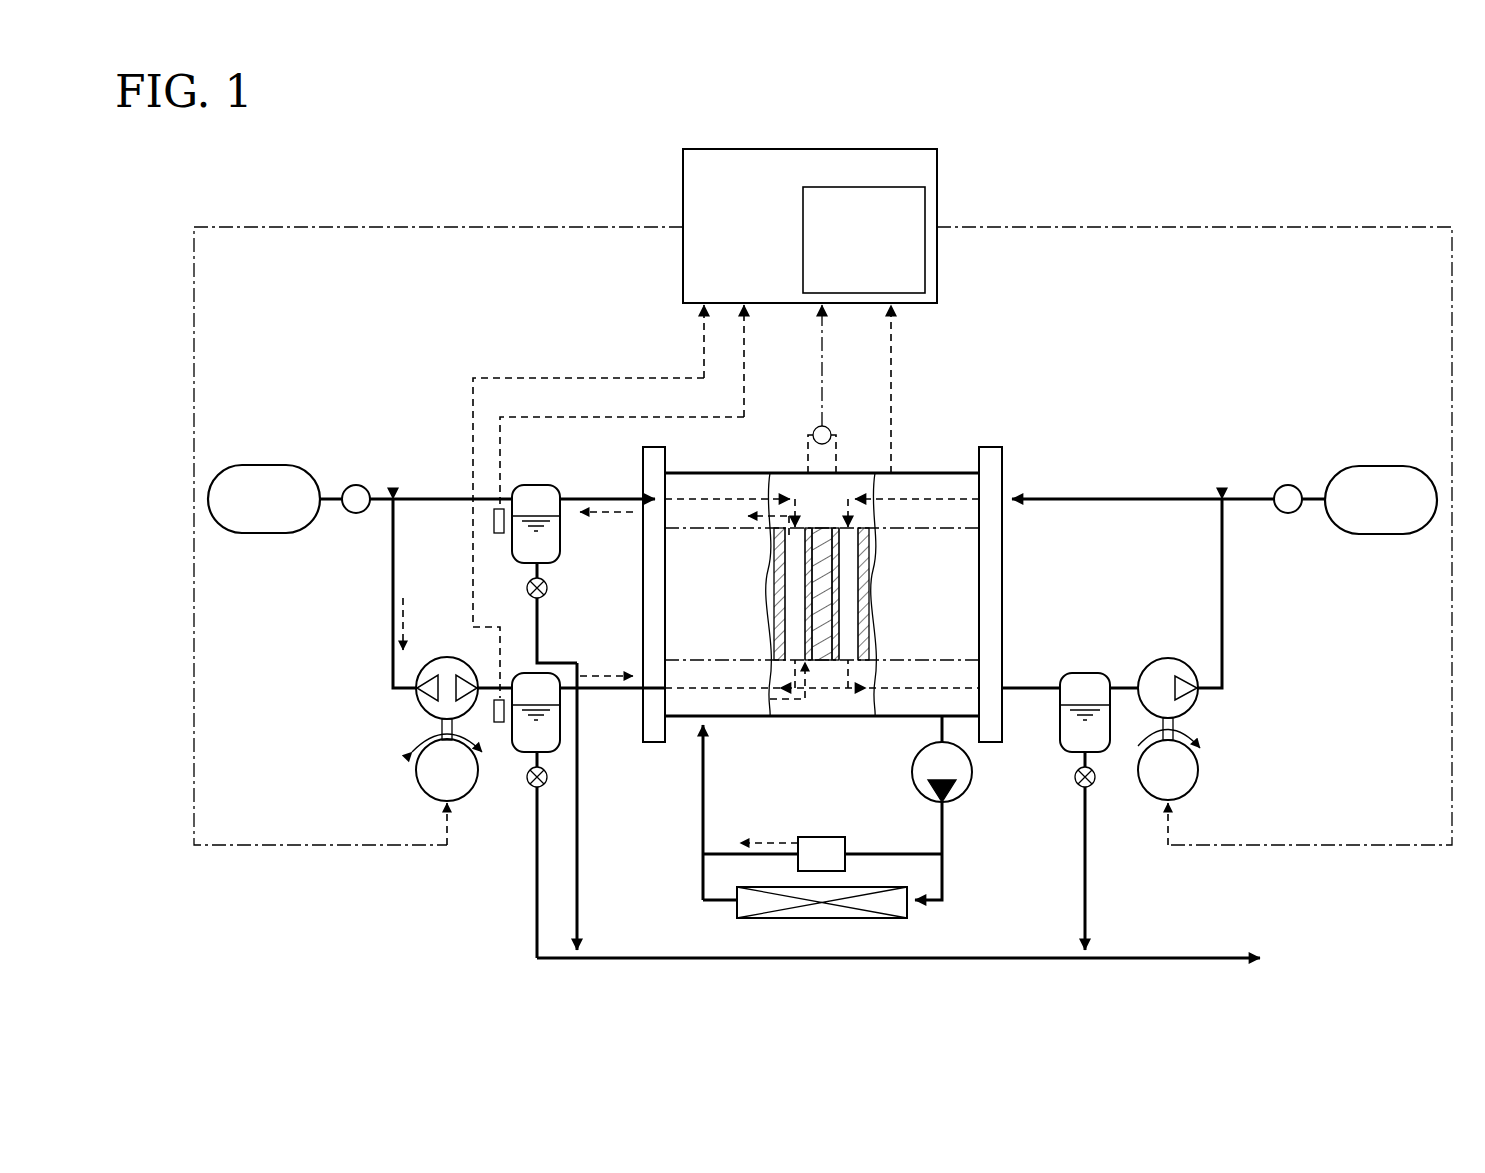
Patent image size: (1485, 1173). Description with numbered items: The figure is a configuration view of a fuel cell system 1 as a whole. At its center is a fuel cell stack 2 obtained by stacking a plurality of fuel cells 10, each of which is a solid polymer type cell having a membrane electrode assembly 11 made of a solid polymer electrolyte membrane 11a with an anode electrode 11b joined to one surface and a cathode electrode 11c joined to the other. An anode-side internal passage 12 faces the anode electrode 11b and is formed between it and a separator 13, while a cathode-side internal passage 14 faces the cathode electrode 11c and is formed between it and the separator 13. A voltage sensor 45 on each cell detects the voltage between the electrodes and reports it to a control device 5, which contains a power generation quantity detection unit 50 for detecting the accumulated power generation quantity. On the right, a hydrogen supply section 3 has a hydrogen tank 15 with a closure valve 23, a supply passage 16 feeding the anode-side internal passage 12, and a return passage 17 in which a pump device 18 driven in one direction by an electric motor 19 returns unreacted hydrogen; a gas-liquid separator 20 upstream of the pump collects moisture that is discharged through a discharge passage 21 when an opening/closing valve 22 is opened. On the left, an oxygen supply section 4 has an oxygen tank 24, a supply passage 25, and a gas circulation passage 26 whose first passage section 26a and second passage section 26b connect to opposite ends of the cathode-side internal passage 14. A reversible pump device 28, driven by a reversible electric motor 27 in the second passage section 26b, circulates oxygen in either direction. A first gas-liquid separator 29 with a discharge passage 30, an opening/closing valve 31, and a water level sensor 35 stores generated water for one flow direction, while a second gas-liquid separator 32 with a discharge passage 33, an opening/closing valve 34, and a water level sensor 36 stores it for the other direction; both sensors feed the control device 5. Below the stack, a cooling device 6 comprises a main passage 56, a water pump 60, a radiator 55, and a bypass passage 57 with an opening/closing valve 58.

The fuel cell system 1 is at (1230, 186).
The fuel cell stack 2 is at (952, 466).
The hydrogen supply section 3 is at (1219, 667).
The oxygen supply section 4 is at (476, 646).
The control device 5 is at (902, 146).
The cooling device 6 is at (877, 834).
The fuel cell 10 is at (841, 627).
The membrane electrode assembly 11 is at (824, 678).
The solid polymer electrolyte membrane 11a is at (822, 662).
The anode electrode 11b is at (867, 653).
The cathode electrode 11c is at (803, 662).
The anode-side internal passage 12 is at (848, 604).
The separator 13 is at (779, 572).
The cathode-side internal passage 14 is at (793, 600).
The hydrogen tank 15 is at (1370, 466).
The supply passage 16 is at (1165, 498).
The return passage 17 is at (1223, 655).
The pump device 18 is at (1168, 658).
The electric motor 19 is at (1195, 788).
The gas-liquid separator 20 is at (1085, 673).
The discharge passage 21 is at (1088, 848).
The opening/closing valve 22 is at (1093, 785).
The closure valve 23 is at (1292, 513).
The oxygen tank 24 is at (262, 466).
The supply passage 25 is at (378, 503).
The gas circulation passage 26 is at (428, 494).
The first passage section 26a is at (590, 488).
The second passage section 26b is at (600, 698).
The electric motor 27 is at (470, 795).
The pump device 28 is at (422, 702).
The first gas-liquid separator 29 is at (530, 673).
The discharge passage 30 is at (537, 930).
The opening/closing valve 31 is at (547, 783).
The second gas-liquid separator 32 is at (530, 485).
The discharge passage 33 is at (580, 862).
The opening/closing valve 34 is at (547, 592).
The water level sensor 35 is at (498, 723).
The water level sensor 36 is at (494, 528).
The voltage sensor 45 is at (814, 431).
The power generation quantity detection unit 50 is at (926, 258).
The radiator 55 is at (830, 918).
The main passage 56 is at (944, 848).
The bypass passage 57 is at (885, 858).
The opening/closing valve 58 is at (846, 852).
The water pump 60 is at (974, 770).